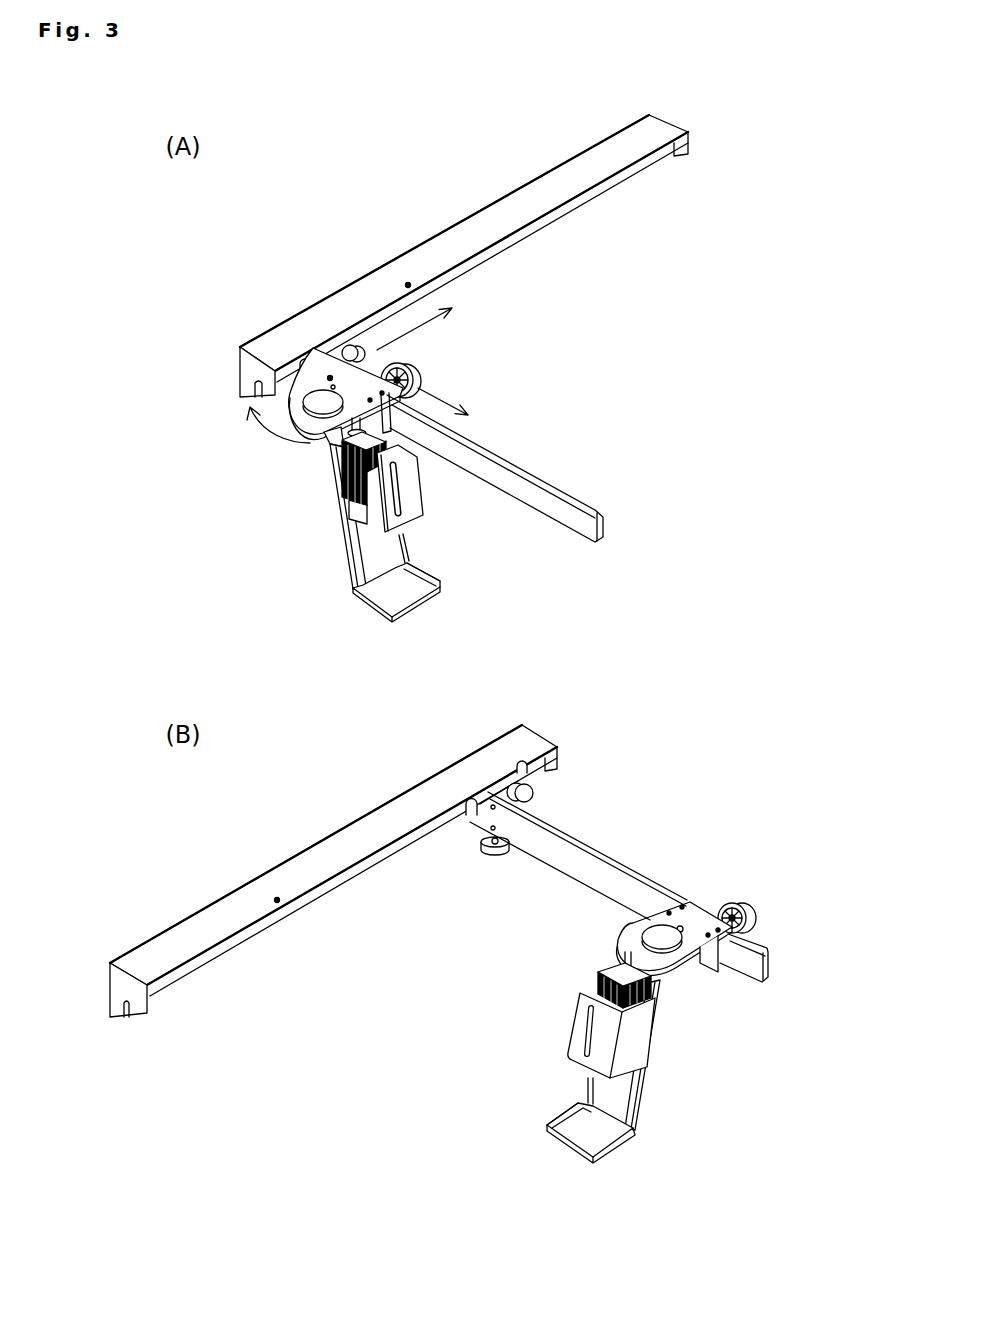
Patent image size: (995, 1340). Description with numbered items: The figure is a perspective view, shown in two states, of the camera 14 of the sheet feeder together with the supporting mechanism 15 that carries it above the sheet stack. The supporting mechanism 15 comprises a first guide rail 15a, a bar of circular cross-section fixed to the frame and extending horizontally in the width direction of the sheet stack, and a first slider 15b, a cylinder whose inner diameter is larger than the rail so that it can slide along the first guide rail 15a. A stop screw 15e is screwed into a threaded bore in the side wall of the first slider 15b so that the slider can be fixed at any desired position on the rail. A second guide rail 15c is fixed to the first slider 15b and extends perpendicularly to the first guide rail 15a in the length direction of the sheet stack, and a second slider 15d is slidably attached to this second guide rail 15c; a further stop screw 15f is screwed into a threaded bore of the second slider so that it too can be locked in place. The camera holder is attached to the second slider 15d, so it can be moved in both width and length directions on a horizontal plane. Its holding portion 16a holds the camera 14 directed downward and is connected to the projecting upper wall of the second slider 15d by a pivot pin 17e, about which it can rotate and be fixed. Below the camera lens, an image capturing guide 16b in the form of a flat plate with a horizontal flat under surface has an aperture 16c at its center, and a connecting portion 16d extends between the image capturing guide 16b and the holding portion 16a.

The camera 14 is at (343, 463).
The supporting mechanism 15 is at (420, 232).
The first guide rail 15a is at (512, 243).
The first slider 15b is at (335, 347).
The second guide rail 15c is at (522, 483).
The second slider 15d is at (413, 372).
The stop screw 15e is at (362, 357).
The stop screw 15f is at (417, 383).
The holding portion 16a is at (360, 515).
The image capturing guide 16b is at (420, 580).
The aperture 16c is at (382, 593).
The connecting portion 16d is at (362, 552).
The pivot pin 17e is at (326, 398).